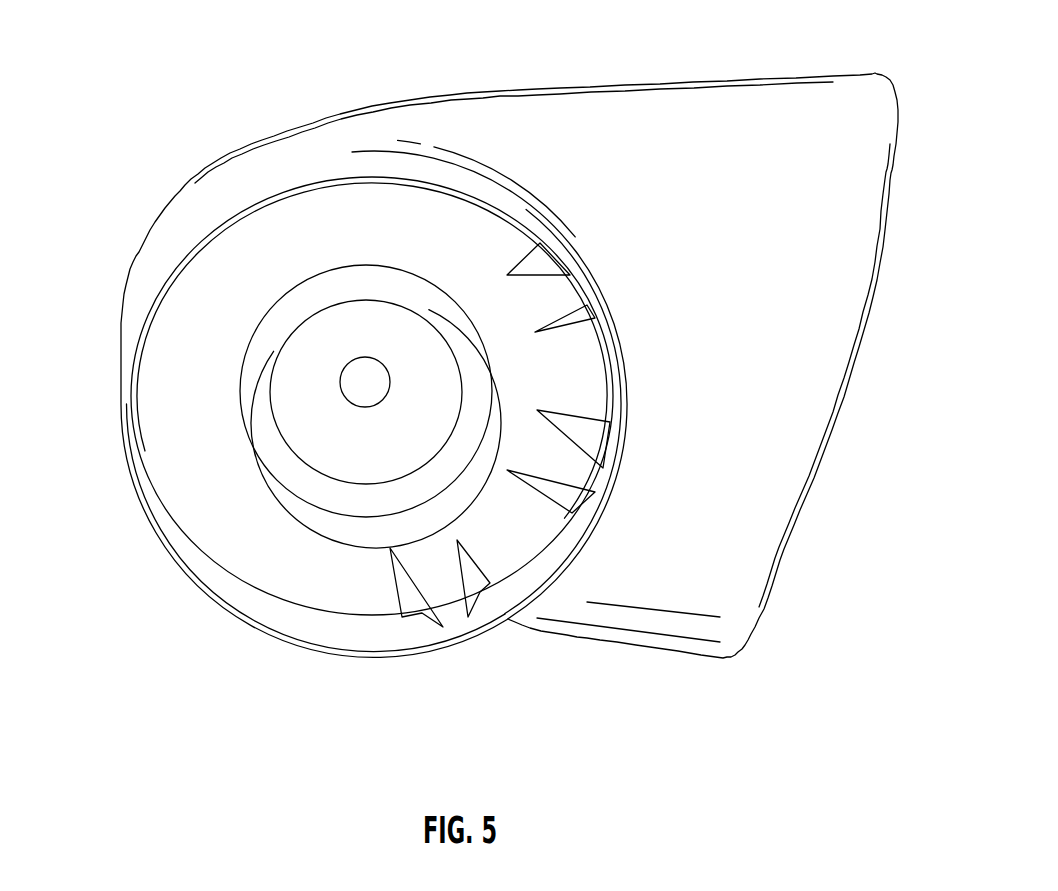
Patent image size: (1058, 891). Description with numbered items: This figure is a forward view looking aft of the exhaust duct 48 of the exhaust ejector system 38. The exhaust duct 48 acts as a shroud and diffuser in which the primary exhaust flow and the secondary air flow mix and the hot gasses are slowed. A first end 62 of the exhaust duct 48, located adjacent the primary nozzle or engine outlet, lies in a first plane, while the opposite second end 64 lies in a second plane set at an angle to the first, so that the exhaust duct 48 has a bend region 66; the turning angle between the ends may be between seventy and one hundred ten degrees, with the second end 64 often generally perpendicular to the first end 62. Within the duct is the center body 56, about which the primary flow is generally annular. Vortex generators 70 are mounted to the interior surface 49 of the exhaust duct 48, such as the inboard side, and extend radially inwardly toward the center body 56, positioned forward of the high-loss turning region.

The exhaust ejector system 38 is at (118, 73).
The exhaust duct 48 is at (136, 313).
The interior surface 49 is at (547, 563).
The center body 56 is at (320, 438).
The first end 62 is at (323, 653).
The second end 64 is at (893, 173).
The bend region 66 is at (282, 140).
The vortex generators 70 is at (480, 593).